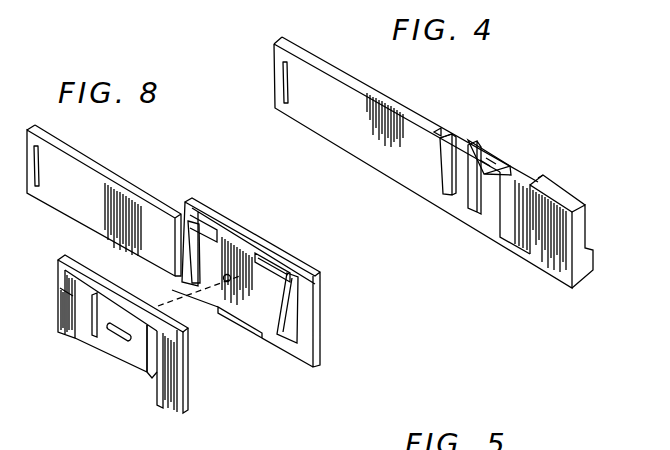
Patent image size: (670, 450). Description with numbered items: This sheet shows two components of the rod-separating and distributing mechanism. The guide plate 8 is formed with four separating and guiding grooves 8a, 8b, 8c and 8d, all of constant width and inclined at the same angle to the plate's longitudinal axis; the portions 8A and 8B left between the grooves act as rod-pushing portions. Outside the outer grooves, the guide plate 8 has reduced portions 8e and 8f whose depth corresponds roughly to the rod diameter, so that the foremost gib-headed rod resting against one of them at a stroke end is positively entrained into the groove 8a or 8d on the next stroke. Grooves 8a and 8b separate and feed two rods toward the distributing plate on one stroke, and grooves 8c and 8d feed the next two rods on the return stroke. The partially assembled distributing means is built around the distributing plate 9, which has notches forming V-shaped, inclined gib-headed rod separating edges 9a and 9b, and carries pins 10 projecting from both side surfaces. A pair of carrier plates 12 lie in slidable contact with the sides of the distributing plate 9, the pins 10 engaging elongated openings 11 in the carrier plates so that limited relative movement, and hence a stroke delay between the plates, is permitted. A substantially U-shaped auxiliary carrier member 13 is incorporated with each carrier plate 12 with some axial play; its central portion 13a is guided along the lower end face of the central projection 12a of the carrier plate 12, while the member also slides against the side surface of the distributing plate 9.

In FIG. 4, the guide plate 8 is at (337, 72).
In FIG. 4, the separating and guiding groove 8a is at (448, 137).
In FIG. 4, the separating and guiding groove 8b is at (470, 139).
In FIG. 4, the separating and guiding groove 8c is at (526, 155).
In FIG. 4, the separating and guiding groove 8d is at (538, 189).
In FIG. 4, the reduced portion 8e is at (437, 124).
In FIG. 4, the reduced portion 8f is at (567, 196).
In FIG. 4, the rod-pushing portion 8A is at (459, 194).
In FIG. 4, the rod-pushing portion 8B is at (490, 193).
In FIG. 8, the distributing plate 9 is at (133, 187).
In FIG. 8, the gib-headed rod separating edge 9a is at (190, 221).
In FIG. 8, the gib-headed rod separating edge 9b is at (289, 272).
In FIG. 8, the pin 10 is at (229, 283).
In FIG. 8, the elongated opening 11 is at (113, 332).
In FIG. 8, the carrier plate 12 is at (257, 224).
In FIG. 8, the central projection 12a is at (138, 356).
In FIG. 8, the auxiliary carrier member 13 is at (144, 395).
In FIG. 8, the central portion 13a is at (95, 338).